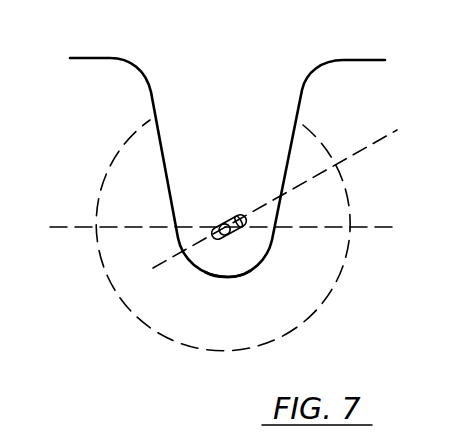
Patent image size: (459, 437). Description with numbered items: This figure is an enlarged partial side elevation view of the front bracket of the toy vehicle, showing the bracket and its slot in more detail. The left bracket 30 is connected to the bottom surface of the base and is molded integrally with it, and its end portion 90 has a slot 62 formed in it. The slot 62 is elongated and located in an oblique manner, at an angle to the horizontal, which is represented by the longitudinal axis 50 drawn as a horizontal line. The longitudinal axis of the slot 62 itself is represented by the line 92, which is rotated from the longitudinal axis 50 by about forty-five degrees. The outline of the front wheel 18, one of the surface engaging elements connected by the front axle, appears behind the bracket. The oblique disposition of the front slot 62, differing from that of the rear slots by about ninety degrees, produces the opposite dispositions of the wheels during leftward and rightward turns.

The left bracket 30 is at (247, 78).
The front wheel 18 is at (133, 153).
The longitudinal axis 50 is at (72, 226).
The line representing the longitudinal axis of the slot 92 is at (367, 148).
The slot 62 is at (230, 213).
The end portion 90 is at (223, 265).